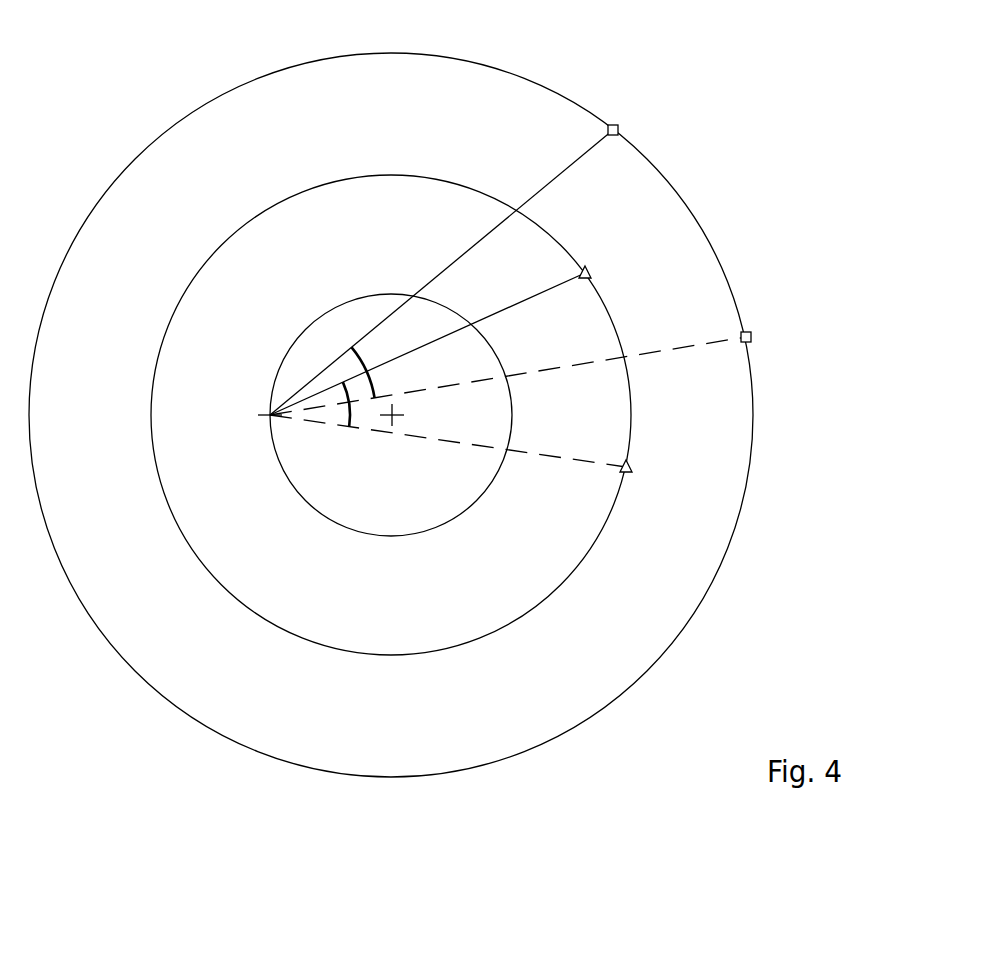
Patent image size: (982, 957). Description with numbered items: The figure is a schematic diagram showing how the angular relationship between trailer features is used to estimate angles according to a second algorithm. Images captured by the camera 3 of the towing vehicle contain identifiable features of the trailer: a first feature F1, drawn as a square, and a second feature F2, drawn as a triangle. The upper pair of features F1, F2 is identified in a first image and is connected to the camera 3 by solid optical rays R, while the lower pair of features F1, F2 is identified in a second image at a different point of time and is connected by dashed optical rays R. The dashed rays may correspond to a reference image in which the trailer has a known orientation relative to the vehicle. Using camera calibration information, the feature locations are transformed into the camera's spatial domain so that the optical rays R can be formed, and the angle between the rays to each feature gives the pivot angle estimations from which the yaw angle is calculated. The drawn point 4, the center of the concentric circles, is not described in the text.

The camera 3 is at (268, 413).
The center point of concentric circles 4 is at (396, 419).
The optical rays R is at (462, 255).
The first feature F1 is at (618, 125).
The second feature F2 is at (590, 268).